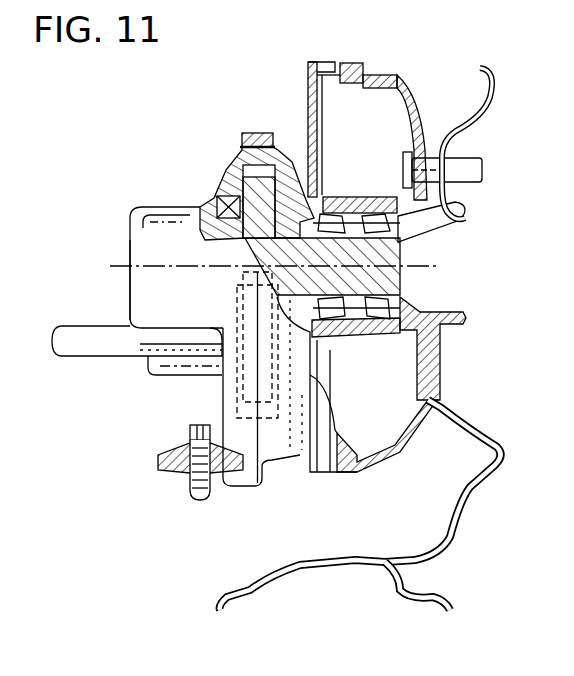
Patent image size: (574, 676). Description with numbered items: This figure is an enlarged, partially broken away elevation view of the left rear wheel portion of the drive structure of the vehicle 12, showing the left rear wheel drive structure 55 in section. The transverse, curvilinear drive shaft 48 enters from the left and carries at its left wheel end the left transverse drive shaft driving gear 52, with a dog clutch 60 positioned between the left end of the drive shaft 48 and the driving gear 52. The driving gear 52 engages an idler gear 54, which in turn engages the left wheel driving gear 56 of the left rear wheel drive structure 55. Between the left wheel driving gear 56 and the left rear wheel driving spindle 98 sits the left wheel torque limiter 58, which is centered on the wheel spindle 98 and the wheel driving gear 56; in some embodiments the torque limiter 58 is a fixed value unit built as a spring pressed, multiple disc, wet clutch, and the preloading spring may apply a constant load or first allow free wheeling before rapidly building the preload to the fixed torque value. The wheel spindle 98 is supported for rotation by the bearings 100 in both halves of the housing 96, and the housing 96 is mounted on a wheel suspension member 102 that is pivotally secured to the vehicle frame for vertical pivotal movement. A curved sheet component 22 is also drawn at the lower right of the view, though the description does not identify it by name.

The vehicle 12 is at (258, 95).
The brake shoe band 22 is at (433, 594).
The transverse drive shaft 48 is at (90, 357).
The left transverse drive shaft driving gear 52 is at (237, 410).
The idler gear 54 is at (277, 367).
The left rear wheel drive structure 55 is at (130, 223).
The left wheel driving gear 56 is at (233, 173).
The left wheel torque limiter 58 is at (130, 292).
The dog clutch 60 is at (148, 380).
The housing 96 is at (240, 140).
The left rear wheel driving spindle 98 is at (351, 335).
The bearings 100 is at (337, 199).
The wheel suspension member 102 is at (180, 480).